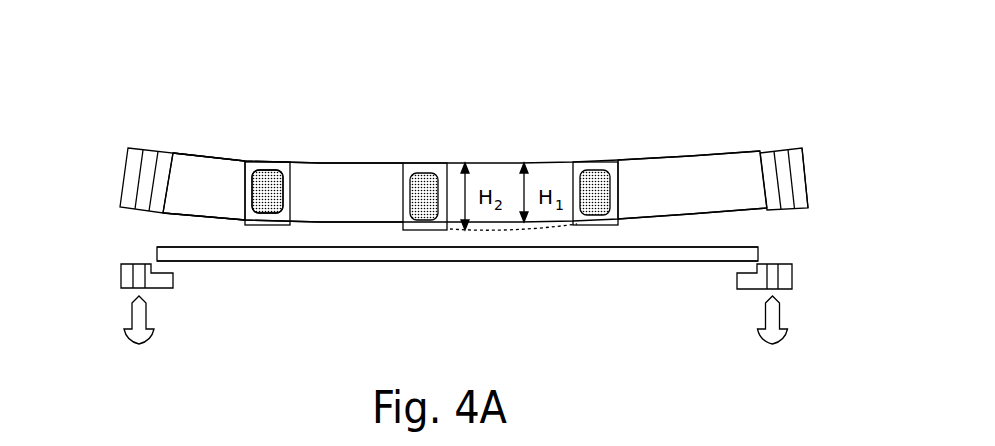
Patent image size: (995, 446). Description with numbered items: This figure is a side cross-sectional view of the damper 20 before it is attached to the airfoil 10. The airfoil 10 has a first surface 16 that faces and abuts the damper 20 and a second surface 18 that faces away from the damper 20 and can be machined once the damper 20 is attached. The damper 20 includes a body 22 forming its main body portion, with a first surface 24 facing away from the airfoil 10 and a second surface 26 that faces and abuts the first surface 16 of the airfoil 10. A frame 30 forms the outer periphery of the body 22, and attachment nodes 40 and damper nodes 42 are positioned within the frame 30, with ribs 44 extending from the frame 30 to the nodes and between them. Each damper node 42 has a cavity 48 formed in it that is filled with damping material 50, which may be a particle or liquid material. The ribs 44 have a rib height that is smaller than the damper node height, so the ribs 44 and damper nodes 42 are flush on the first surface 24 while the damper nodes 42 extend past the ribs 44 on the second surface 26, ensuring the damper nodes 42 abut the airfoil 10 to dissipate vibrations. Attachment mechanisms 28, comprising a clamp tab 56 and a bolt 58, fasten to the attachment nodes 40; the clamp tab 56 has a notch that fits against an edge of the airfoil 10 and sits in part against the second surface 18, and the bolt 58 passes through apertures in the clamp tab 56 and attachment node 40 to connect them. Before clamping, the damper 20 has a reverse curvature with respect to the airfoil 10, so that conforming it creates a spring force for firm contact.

The airfoil 10 is at (457, 307).
The first surface 16 is at (352, 238).
The second surface 18 is at (408, 271).
The damper 20 is at (465, 122).
The body 22 is at (662, 192).
The first surface 24 is at (198, 146).
The second surface 26 is at (191, 223).
The attachment mechanisms 28 is at (405, 304).
The frame 30 is at (812, 193).
The attachment nodes 40 is at (468, 131).
The damper nodes 42 is at (283, 165).
The ribs 44 is at (205, 188).
The cavities 48 is at (275, 205).
The damping material 50 is at (264, 202).
The clamp tab 56 is at (128, 275).
The bolt 58 is at (137, 344).